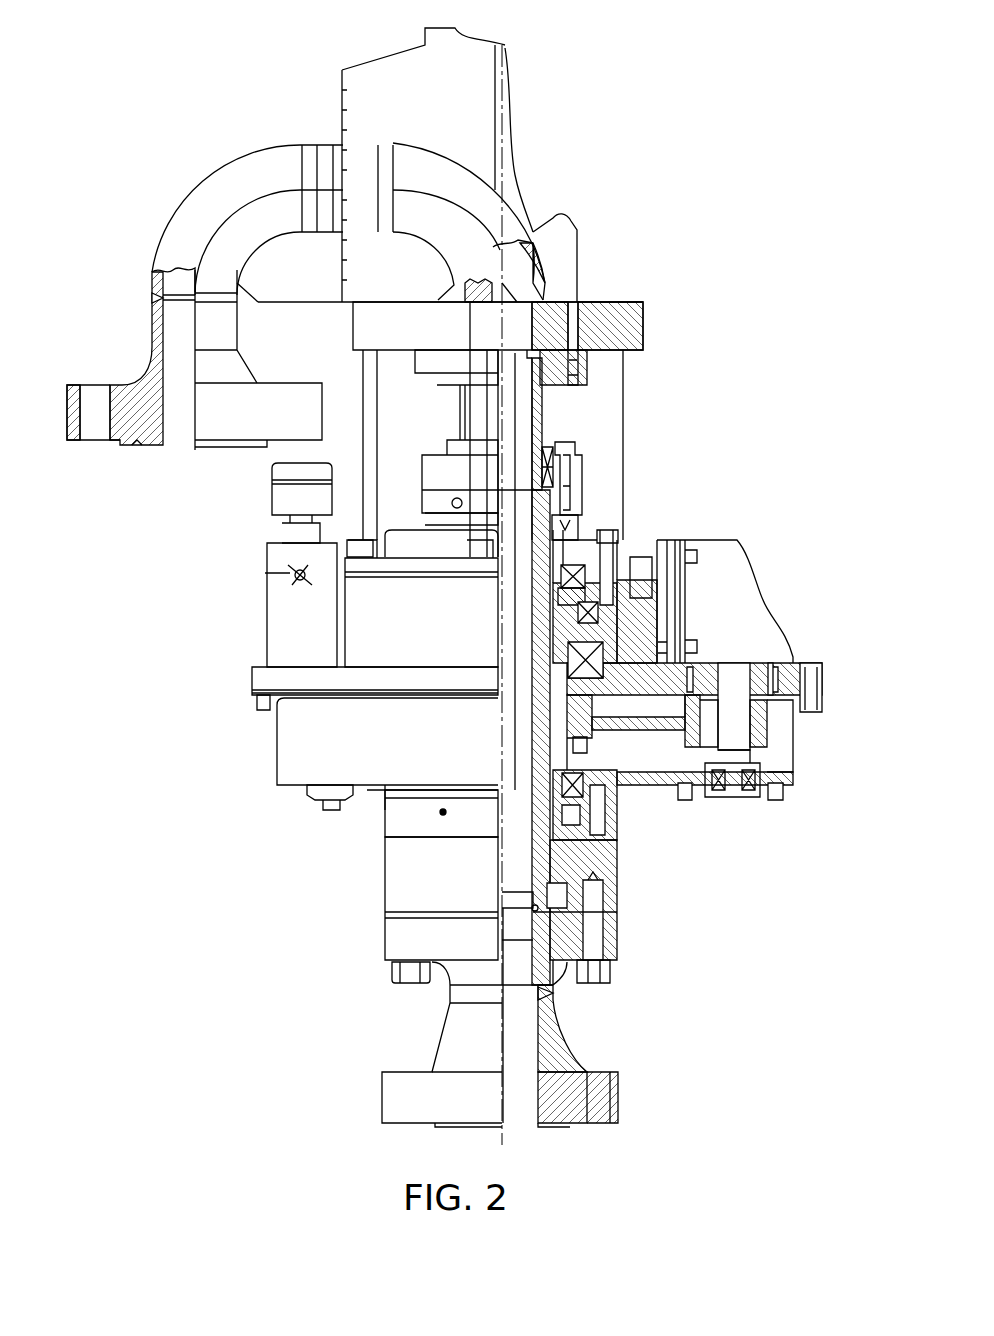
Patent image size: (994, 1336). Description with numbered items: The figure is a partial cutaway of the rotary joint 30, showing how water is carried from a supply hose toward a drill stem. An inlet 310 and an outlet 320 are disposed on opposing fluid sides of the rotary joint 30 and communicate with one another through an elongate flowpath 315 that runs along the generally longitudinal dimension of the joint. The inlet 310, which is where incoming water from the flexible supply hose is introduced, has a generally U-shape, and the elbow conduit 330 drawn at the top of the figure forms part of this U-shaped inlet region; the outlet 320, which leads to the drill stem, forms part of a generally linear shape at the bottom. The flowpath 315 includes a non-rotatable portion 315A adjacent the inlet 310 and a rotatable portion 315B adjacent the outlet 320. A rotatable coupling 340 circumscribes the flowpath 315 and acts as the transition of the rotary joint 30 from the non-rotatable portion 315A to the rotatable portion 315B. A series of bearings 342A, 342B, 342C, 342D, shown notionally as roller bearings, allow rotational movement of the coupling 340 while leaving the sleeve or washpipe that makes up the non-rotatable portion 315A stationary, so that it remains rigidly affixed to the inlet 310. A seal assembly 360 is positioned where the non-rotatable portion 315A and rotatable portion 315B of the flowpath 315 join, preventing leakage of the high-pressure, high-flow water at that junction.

The rotary joint 30 is at (216, 112).
The elbow conduit 330 is at (213, 183).
The inlet 310 is at (157, 461).
The flowpath 315 is at (837, 295).
The non-rotatable portion 315A is at (531, 426).
The rotatable portion 315B is at (523, 544).
The seal assembly 360 is at (583, 468).
The bearing 342A is at (580, 786).
The bearing 342B is at (600, 655).
The bearing 342C is at (597, 612).
The bearing 342D is at (578, 575).
The rotatable coupling 340 is at (241, 481).
The outlet 320 is at (580, 1137).